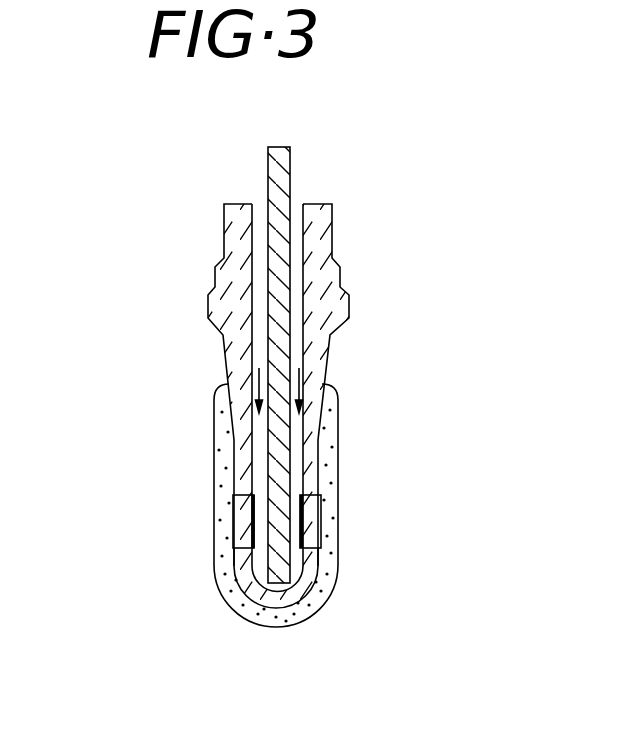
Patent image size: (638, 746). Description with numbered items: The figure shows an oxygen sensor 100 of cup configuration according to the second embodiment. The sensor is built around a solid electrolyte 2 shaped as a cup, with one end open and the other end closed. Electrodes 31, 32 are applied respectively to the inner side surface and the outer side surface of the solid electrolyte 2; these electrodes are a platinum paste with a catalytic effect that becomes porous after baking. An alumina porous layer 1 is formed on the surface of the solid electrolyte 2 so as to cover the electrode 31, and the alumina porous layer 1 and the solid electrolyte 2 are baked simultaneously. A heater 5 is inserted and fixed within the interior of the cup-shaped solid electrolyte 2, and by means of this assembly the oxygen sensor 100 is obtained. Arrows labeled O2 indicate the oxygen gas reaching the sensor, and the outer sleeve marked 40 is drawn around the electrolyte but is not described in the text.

The oxygen sensor 100 is at (298, 393).
The alumina porous layer 1 is at (337, 384).
The solid electrolyte 2 is at (340, 403).
The tube 40 is at (300, 227).
The heater 5 is at (277, 572).
The electrode 32 is at (235, 500).
The electrode 31 is at (237, 560).
The oxygen gas flow O2 is at (237, 270).